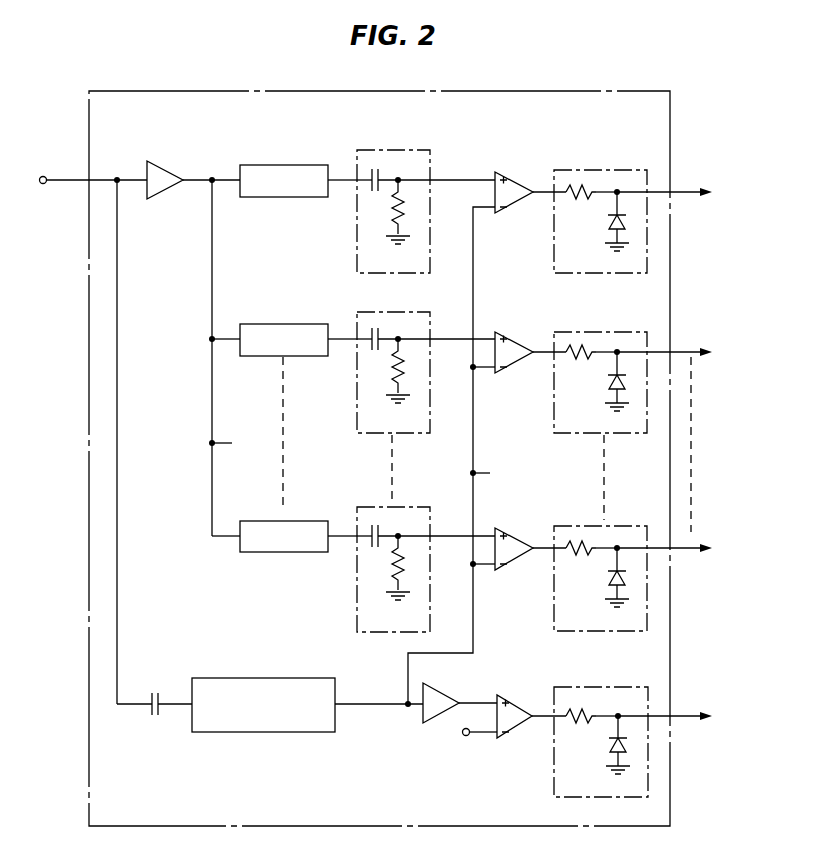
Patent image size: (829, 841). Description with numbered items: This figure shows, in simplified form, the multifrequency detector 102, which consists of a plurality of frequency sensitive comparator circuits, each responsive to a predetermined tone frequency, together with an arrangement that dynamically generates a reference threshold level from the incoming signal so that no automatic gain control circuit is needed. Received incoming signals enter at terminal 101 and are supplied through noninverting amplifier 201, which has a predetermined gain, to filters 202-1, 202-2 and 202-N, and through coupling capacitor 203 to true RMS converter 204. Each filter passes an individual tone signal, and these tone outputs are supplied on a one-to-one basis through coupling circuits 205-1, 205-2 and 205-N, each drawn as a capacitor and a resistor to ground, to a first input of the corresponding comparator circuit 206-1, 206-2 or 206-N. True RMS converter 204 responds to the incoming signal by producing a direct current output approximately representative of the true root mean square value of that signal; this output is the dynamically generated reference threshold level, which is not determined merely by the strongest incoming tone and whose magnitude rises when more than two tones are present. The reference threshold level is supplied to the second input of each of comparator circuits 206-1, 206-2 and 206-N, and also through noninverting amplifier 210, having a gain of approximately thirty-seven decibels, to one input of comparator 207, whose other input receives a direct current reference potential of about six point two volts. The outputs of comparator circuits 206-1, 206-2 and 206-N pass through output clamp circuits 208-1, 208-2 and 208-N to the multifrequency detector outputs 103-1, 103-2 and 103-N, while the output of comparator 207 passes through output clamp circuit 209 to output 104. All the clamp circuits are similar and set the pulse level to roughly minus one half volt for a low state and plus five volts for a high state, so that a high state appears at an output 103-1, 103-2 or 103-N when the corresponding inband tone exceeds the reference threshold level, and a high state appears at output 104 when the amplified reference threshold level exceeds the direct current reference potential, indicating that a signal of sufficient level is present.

The terminal 101 is at (43, 176).
The multifrequency detector 102 is at (192, 91).
The multifrequency detector output 103-1 is at (684, 192).
The multifrequency detector output 103-2 is at (684, 352).
The multifrequency detector output 103-N is at (694, 548).
The multifrequency detector output 104 is at (698, 716).
The noninverting amplifier 201 is at (160, 161).
The filter 202-1 is at (262, 197).
The filter 202-2 is at (258, 324).
The filter 202-N is at (288, 552).
The coupling capacitor 203 is at (157, 717).
The true RMS converter 204 is at (244, 678).
The coupling circuit 205-1 is at (382, 150).
The coupling circuit 205-2 is at (388, 312).
The coupling circuit 205-N is at (424, 507).
The comparator circuit 206-1 is at (523, 160).
The comparator circuit 206-2 is at (530, 325).
The comparator circuit 206-N is at (522, 518).
The comparator 207 is at (524, 688).
The output clamp circuit 208-1 is at (554, 254).
The output clamp circuit 208-2 is at (554, 413).
The output clamp circuit 208-N is at (554, 616).
The output clamp circuit 209 is at (580, 687).
The noninverting amplifier 210 is at (428, 723).